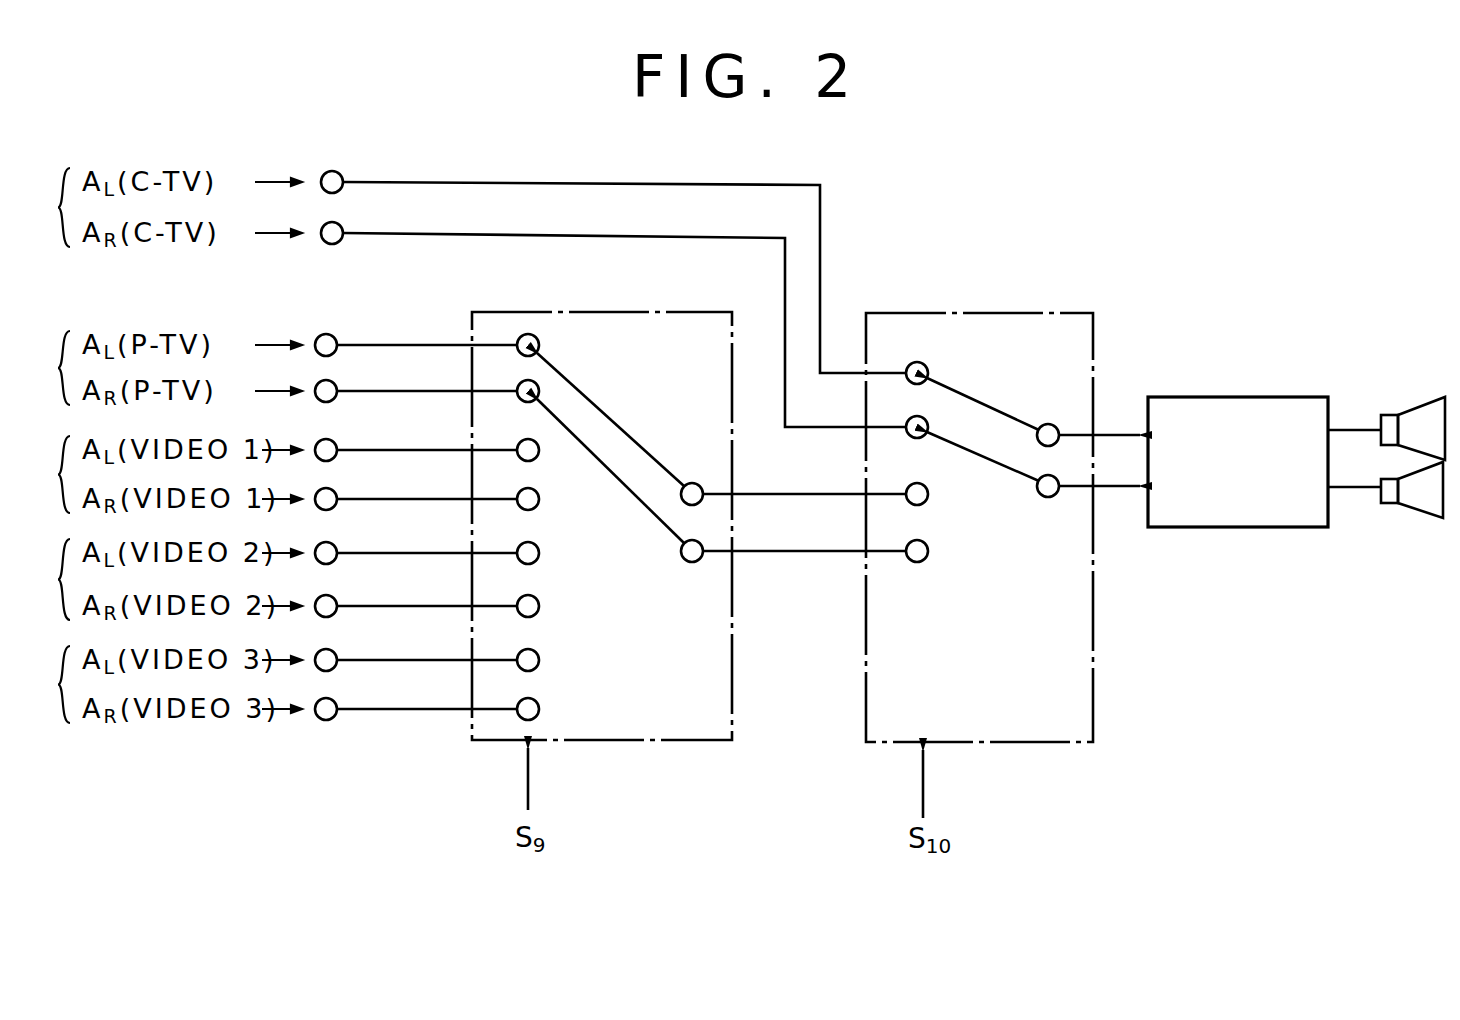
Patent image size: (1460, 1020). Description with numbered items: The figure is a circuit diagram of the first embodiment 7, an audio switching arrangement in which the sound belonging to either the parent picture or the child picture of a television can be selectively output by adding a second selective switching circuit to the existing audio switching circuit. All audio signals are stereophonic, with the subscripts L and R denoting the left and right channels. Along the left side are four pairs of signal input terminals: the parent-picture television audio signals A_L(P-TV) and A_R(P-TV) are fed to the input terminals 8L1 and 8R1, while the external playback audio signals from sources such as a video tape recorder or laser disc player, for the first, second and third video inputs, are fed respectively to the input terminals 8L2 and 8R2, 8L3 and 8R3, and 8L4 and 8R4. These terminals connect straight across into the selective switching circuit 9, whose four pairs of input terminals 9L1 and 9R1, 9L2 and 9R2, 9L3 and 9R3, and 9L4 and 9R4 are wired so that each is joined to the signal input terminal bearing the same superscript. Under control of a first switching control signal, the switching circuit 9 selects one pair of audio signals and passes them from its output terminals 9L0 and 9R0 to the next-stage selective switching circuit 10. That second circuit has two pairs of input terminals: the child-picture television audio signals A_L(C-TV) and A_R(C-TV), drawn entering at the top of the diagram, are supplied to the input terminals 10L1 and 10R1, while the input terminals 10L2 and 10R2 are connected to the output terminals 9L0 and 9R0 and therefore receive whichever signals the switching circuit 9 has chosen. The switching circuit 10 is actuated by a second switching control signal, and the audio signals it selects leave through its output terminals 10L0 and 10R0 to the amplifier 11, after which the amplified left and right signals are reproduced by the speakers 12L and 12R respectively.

The first embodiment 7 is at (1238, 207).
The signal input terminal 8L1 is at (333, 336).
The signal input terminal 8R1 is at (333, 382).
The signal input terminal 8L2 is at (333, 441).
The signal input terminal 8R2 is at (333, 490).
The signal input terminal 8L3 is at (333, 544).
The signal input terminal 8R3 is at (333, 597).
The signal input terminal 8L4 is at (333, 651).
The signal input terminal 8R4 is at (333, 700).
The selective switching circuit 9 is at (650, 742).
The input terminal 9L1 is at (540, 343).
The input terminal 9R1 is at (522, 402).
The input terminal 9L2 is at (537, 458).
The input terminal 9R2 is at (537, 507).
The input terminal 9L3 is at (540, 555).
The input terminal 9R3 is at (540, 608).
The input terminal 9L4 is at (540, 662).
The input terminal 9R4 is at (540, 711).
The output terminal 9L0 is at (689, 482).
The output terminal 9R0 is at (691, 562).
The selective switching circuit 10 is at (1045, 744).
The input terminal 10L1 is at (927, 366).
The input terminal 10R1 is at (920, 438).
The input terminal 10L2 is at (926, 503).
The input terminal 10R2 is at (926, 560).
The output terminal 10L0 is at (1045, 423).
The output terminal 10R0 is at (1047, 497).
The amplifier 11 is at (1227, 397).
The speaker 12L is at (1412, 405).
The speaker 12R is at (1412, 513).